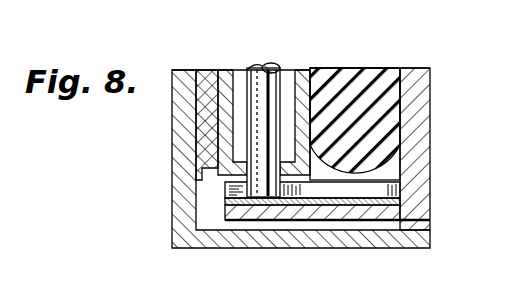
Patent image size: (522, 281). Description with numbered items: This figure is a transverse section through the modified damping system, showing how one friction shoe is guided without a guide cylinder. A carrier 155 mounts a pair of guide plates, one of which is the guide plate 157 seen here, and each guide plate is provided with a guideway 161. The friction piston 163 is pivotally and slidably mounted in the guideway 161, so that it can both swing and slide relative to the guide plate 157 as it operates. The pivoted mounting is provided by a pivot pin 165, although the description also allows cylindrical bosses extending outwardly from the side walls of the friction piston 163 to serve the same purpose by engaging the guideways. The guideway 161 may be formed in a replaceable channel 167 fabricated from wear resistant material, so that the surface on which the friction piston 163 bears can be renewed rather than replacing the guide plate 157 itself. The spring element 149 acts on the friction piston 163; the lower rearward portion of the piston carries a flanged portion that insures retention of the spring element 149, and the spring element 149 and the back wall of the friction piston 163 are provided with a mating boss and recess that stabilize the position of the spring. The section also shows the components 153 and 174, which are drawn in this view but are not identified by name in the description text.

The spring element 149 is at (363, 102).
The housing body 153 is at (183, 204).
The carrier 155 is at (421, 137).
The guide plate 157 is at (368, 210).
The guideway 161 is at (293, 197).
The friction piston 163 is at (225, 88).
The pivot pin 165 is at (270, 92).
The replaceable channel 167 is at (243, 200).
The cross-hatched liner wall 174 is at (213, 128).